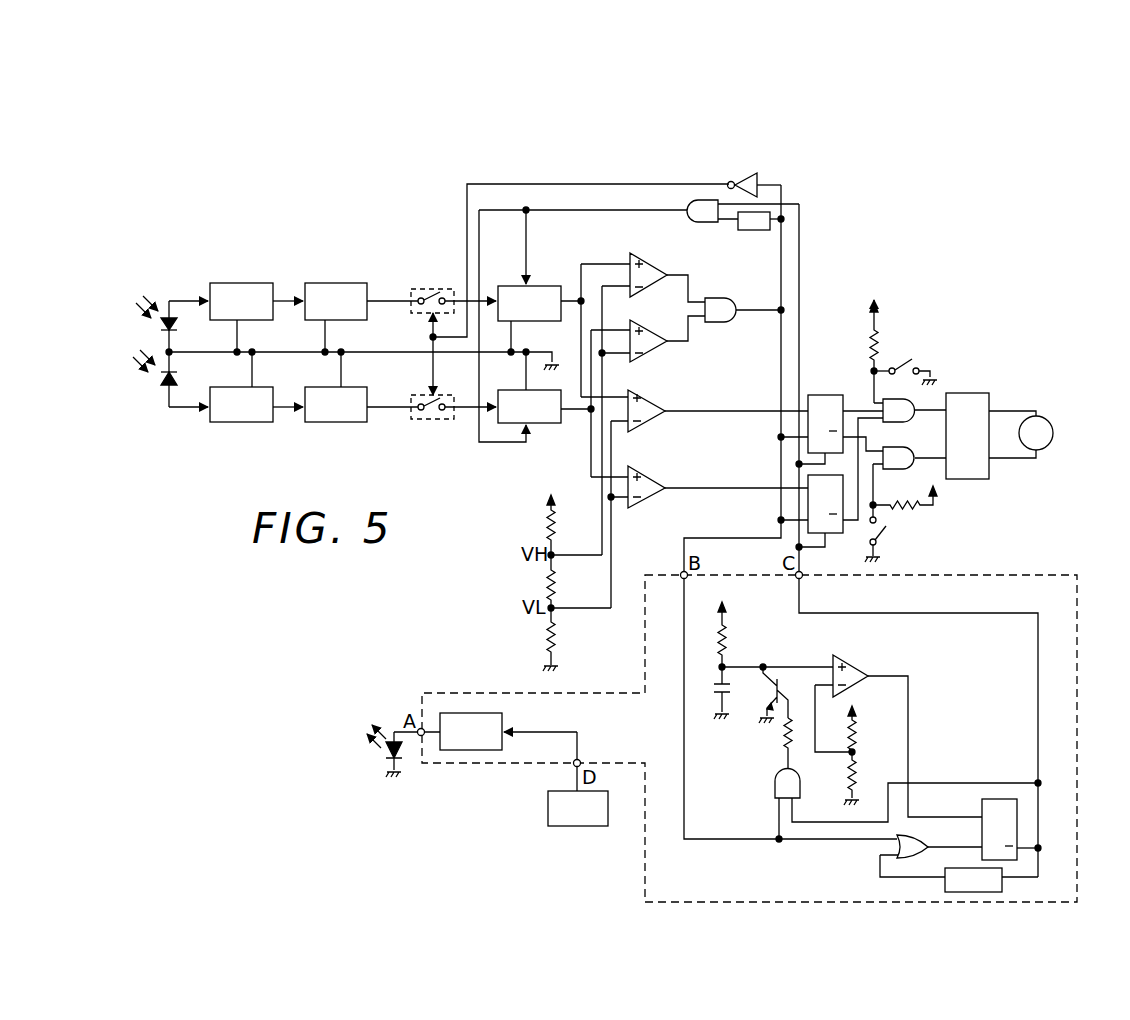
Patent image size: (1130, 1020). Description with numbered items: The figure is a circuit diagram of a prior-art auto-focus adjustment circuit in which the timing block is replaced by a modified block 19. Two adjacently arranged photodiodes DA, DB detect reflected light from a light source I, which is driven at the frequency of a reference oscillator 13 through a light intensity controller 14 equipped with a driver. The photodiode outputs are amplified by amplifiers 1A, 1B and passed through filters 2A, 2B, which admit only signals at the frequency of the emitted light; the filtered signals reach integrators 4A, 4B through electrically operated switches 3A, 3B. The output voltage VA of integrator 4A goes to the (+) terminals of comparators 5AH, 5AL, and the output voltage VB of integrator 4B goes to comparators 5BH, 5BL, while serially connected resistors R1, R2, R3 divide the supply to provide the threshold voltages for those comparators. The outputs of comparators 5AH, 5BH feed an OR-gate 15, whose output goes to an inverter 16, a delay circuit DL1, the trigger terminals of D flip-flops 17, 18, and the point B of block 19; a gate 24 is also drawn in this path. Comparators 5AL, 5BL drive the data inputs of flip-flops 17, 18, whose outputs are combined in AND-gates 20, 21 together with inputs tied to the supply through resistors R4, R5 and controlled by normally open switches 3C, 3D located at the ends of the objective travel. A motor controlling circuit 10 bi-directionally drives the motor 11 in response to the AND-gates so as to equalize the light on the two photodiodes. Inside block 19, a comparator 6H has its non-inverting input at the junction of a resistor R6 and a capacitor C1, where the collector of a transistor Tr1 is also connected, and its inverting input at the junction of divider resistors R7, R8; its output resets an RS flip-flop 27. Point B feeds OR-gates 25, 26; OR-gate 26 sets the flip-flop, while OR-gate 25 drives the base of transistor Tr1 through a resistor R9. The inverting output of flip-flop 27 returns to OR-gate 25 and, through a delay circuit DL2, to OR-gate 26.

The amplifier 1A is at (243, 283).
The amplifier 1B is at (257, 422).
The filter 2A is at (320, 283).
The filter 2B is at (352, 422).
The switch 3A is at (429, 289).
The switch 3B is at (440, 419).
The switch 3C is at (915, 364).
The switch 3D is at (885, 538).
The integrator 4A is at (503, 286).
The integrator 4B is at (541, 423).
The comparator 5AH is at (653, 265).
The comparator 5BH is at (660, 352).
The comparator 5AL is at (656, 398).
The comparator 5BL is at (656, 476).
The comparator 6H is at (855, 665).
The motor controlling circuit 10 is at (972, 393).
The motor 11 is at (1048, 420).
The reference oscillator 13 is at (582, 826).
The light intensity controller 14 is at (502, 722).
The OR-gate 15 is at (738, 300).
The inverter 16 is at (757, 172).
The D flip-flop 17 is at (818, 393).
The D flip-flop 18 is at (838, 533).
The block 19 is at (1008, 577).
The AND-gate 20 is at (893, 399).
The AND-gate 21 is at (905, 447).
The gate 24 is at (688, 215).
The OR-gate 25 is at (774, 784).
The OR-gate 26 is at (920, 843).
The RS flip-flop 27 is at (985, 799).
The photodiode DA is at (170, 351).
The photodiode DB is at (169, 373).
The delay circuit DL1 is at (752, 230).
The delay circuit DL2 is at (942, 884).
The resistor R1 is at (566, 525).
The resistor R2 is at (566, 581).
The resistor R3 is at (564, 639).
The resistor R4 is at (889, 351).
The resistor R5 is at (903, 486).
The resistor R6 is at (736, 634).
The resistor R7 is at (867, 729).
The resistor R8 is at (865, 778).
The resistor R9 is at (775, 743).
The capacitor C1 is at (712, 693).
The transistor Tr1 is at (761, 695).
The light source I is at (388, 751).
The output voltage of integrator 4A VA is at (568, 286).
The output voltage of integrator 4B VB is at (575, 418).